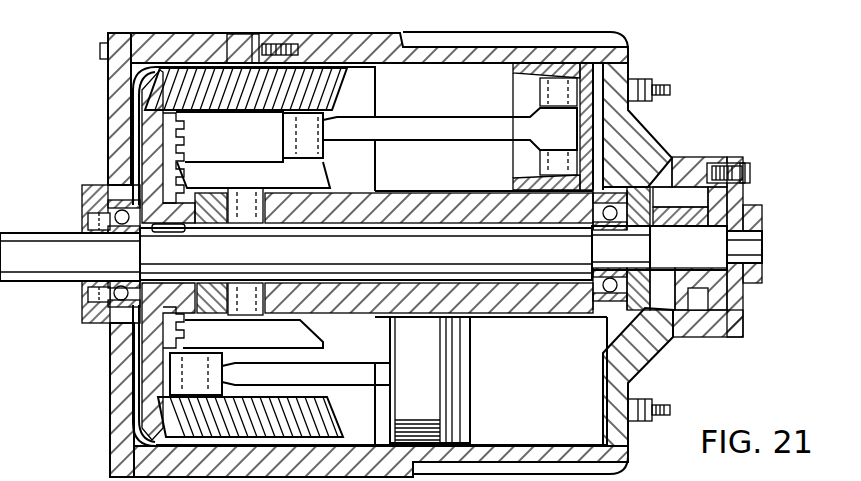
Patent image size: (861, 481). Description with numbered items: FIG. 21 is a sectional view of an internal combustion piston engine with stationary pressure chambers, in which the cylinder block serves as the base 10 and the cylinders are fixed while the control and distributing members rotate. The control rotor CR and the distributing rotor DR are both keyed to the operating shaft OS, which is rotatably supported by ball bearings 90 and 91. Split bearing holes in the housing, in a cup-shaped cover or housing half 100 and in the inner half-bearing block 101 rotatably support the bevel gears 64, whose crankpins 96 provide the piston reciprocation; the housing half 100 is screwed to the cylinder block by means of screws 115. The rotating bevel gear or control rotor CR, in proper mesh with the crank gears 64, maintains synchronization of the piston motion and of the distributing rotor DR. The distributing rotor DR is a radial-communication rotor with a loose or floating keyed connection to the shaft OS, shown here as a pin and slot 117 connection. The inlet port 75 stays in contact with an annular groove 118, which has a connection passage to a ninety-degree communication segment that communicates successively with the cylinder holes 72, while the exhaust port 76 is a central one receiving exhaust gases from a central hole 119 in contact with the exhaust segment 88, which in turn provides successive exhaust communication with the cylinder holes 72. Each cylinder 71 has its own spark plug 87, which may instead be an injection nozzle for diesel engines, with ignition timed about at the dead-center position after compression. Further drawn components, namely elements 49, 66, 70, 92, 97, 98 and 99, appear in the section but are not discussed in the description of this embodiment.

The base 10 is at (642, 49).
The cover 49 is at (488, 30).
The bevel gears 64 is at (302, 68).
The cup member 66 is at (513, 97).
The rotor arm 70 is at (405, 117).
The cylinder 71 is at (460, 187).
The cylinder holes 72 is at (618, 147).
The inlet port 75 is at (703, 157).
The exhaust port 76 is at (763, 235).
The spark plug 87 is at (670, 82).
The exhaust segment 88 is at (668, 268).
The ball bearing 90 is at (93, 187).
The ball bearing 91 is at (593, 312).
The bearing 92 is at (80, 297).
The crankpins 96 is at (325, 110).
The hub 97 is at (250, 163).
The bolt 98 is at (243, 33).
The hub flange 99 is at (313, 192).
The cup-shaped cover or housing half 100 is at (107, 88).
The inner half-bearing block 101 is at (213, 197).
The screws 115 is at (100, 50).
The pin and slot connection 117 is at (672, 157).
The annular groove 118 is at (697, 290).
The central hole 119 is at (720, 263).
The control rotor CR is at (138, 133).
The operating shaft OS is at (32, 233).
The distributing rotor DR is at (747, 200).